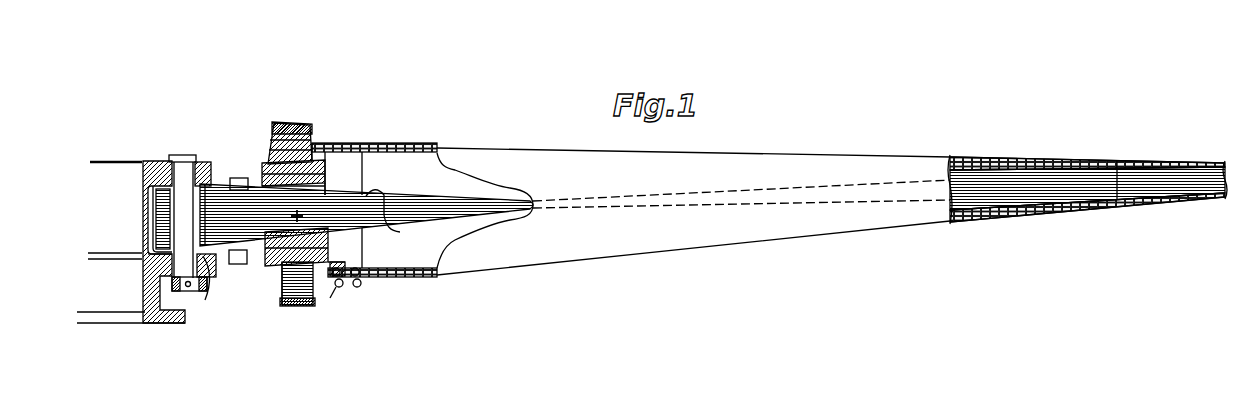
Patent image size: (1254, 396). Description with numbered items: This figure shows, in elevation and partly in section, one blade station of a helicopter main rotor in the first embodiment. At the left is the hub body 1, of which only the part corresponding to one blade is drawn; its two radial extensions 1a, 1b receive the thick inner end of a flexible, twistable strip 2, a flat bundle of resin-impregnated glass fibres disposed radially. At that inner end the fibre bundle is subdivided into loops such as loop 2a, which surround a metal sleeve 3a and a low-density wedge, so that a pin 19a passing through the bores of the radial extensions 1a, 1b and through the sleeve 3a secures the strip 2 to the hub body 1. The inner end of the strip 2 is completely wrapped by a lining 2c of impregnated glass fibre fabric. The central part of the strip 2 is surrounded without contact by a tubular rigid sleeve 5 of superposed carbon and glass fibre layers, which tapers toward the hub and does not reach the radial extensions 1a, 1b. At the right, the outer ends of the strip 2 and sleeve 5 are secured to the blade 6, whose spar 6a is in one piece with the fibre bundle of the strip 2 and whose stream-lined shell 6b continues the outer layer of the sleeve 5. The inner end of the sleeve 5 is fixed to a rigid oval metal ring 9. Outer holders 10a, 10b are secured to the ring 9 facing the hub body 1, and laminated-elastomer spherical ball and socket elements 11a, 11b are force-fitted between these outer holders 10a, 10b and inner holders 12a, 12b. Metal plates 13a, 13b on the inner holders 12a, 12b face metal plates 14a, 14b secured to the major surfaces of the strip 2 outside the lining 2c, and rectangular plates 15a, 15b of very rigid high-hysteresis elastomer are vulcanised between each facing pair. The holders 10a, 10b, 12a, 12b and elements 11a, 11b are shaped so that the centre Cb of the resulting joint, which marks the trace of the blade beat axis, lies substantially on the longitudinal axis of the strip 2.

The hub body 1 is at (153, 160).
The radial extension 1a is at (203, 165).
The radial extension 1b is at (216, 290).
The flexible twistable strip 2 is at (456, 190).
The loop 2a is at (165, 212).
The lining 2c is at (394, 218).
The metal sleeve 3a is at (224, 268).
The tubular rigid sleeve 5 is at (830, 156).
The blade 6 is at (1170, 160).
The spar 6a is at (1178, 180).
The stream-lined shell 6b is at (1135, 207).
The rigid ring 9 is at (340, 143).
The outer holder 10a is at (306, 306).
The outer holder 10b is at (287, 128).
The spherical ball and socket element 11a is at (287, 305).
The spherical ball and socket element 11b is at (312, 148).
The inner holder 12a is at (273, 267).
The inner holder 12b is at (278, 152).
The metal plate 13a is at (330, 262).
The metal plate 13b is at (310, 183).
The metal plate 14a is at (246, 264).
The metal plate 14b is at (257, 184).
The rectangular plate 15a is at (342, 284).
The rectangular plate 15b is at (323, 183).
The pin 19a is at (190, 263).
The beat axis trace / ball and socket joint centre Cb is at (297, 216).